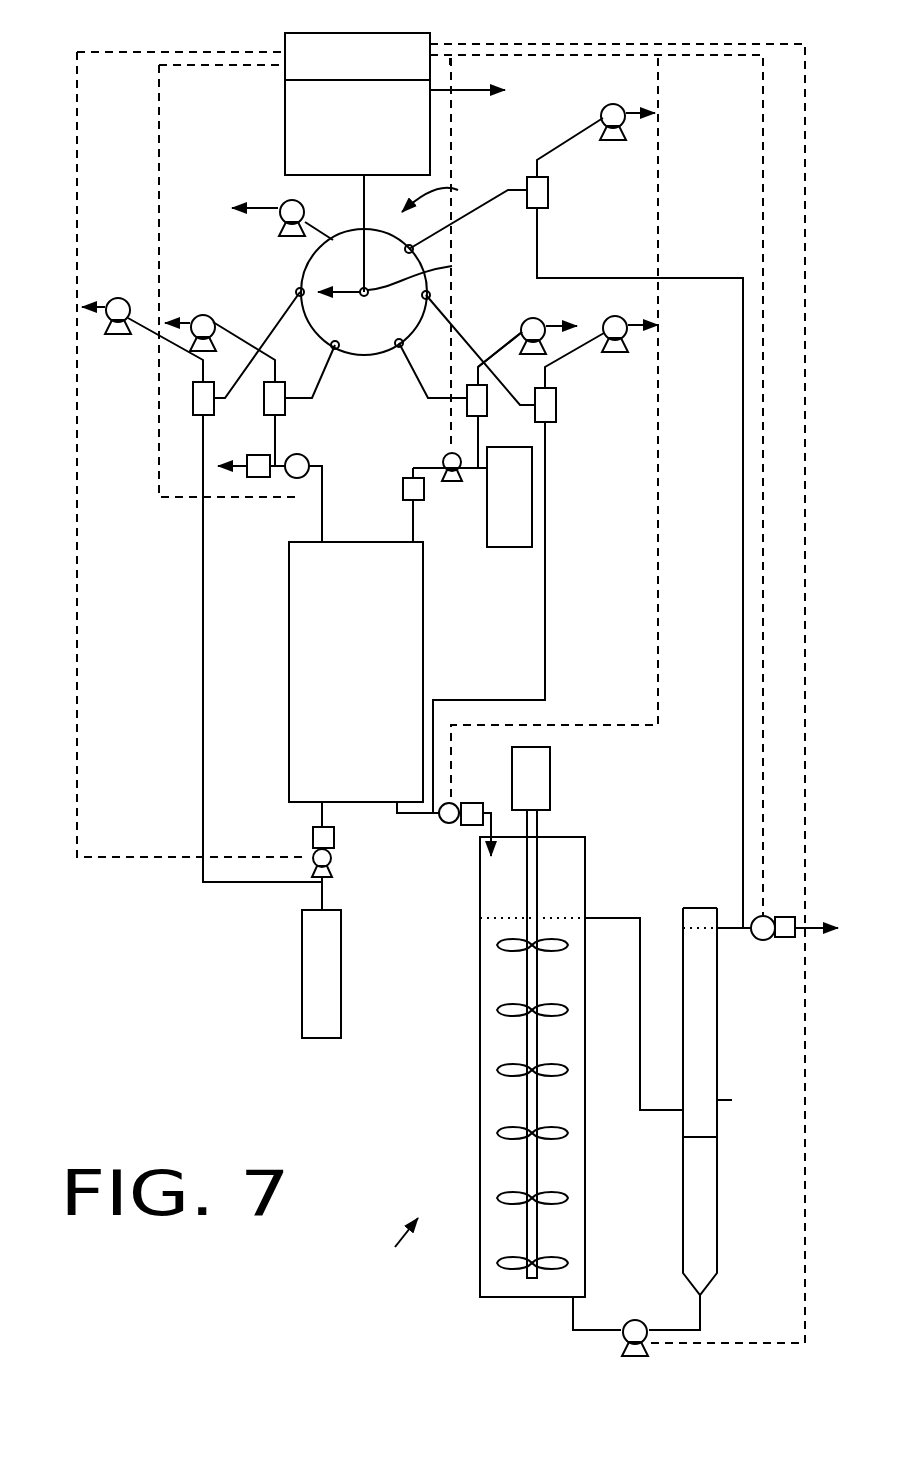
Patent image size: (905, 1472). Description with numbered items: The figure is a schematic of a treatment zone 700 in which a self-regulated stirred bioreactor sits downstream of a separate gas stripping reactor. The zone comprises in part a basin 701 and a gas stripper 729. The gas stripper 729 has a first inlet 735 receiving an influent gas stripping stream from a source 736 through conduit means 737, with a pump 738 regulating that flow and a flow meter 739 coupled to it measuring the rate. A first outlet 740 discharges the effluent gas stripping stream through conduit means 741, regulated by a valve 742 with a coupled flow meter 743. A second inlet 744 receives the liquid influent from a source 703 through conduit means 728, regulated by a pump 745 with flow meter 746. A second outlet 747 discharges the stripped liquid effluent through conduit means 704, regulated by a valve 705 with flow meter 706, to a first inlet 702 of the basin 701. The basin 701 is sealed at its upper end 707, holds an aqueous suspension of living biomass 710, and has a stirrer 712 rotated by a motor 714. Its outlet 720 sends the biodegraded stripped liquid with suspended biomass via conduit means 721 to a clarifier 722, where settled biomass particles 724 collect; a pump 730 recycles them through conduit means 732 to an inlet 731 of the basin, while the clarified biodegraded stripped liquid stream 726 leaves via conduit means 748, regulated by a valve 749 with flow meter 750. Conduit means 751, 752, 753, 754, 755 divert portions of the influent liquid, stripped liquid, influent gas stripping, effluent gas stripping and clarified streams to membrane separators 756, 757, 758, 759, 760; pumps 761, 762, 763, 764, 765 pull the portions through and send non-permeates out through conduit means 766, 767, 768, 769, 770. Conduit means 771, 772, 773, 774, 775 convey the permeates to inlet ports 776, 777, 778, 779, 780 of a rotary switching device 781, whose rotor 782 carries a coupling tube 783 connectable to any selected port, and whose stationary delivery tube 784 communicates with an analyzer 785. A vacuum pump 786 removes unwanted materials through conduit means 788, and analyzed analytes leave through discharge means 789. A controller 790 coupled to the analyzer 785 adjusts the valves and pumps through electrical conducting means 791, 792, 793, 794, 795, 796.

The treatment zone 700 is at (389, 1243).
The basin 701 is at (480, 1105).
The first inlet 702 is at (495, 835).
The source 703 is at (512, 547).
The conduit means 704 is at (418, 825).
The valve 705 is at (444, 825).
The flow meter 706 is at (472, 825).
The upper end 707 is at (558, 837).
The living biomass 710 is at (570, 1118).
The stirrer 712 is at (540, 880).
The motor 714 is at (540, 778).
The outlet 720 is at (588, 918).
The conduit means 721 is at (642, 930).
The clarifier 722 is at (717, 1042).
The settled biomass particles 724 is at (708, 1168).
The clarified biodegraded stripped liquid stream 726 is at (717, 1100).
The conduit means 728 is at (478, 485).
The gas stripper 729 is at (289, 716).
The pump 730 is at (636, 1328).
The inlet 731 is at (573, 1300).
The conduit means 732 is at (700, 1325).
The first inlet 735 is at (322, 812).
The source 736 is at (302, 962).
The conduit means 737 is at (322, 902).
The pump 738 is at (330, 864).
The flow meter 739 is at (313, 838).
The first outlet 740 is at (318, 542).
The conduit means 741 is at (322, 508).
The valve 742 is at (308, 460).
The flow meter 743 is at (258, 477).
The second inlet 744 is at (413, 542).
The pump 745 is at (452, 481).
The flow meter 746 is at (410, 478).
The second outlet 747 is at (400, 812).
The conduit means 748 is at (733, 927).
The valve 749 is at (760, 940).
The flow meter 750 is at (785, 937).
The conduit means 751 is at (468, 430).
The conduit means 752 is at (545, 632).
The conduit means 753 is at (203, 588).
The conduit means 754 is at (275, 435).
The conduit means 755 is at (743, 410).
The membrane separator 756 is at (467, 405).
The membrane separator 757 is at (556, 405).
The membrane separator 758 is at (193, 398).
The membrane separator 759 is at (285, 412).
The membrane separator 760 is at (548, 190).
The pump 761 is at (533, 319).
The pump 762 is at (617, 318).
The pump 763 is at (116, 306).
The pump 764 is at (202, 318).
The pump 765 is at (612, 112).
The conduit means 766 is at (492, 358).
The conduit means 767 is at (578, 342).
The conduit means 768 is at (170, 328).
The conduit means 769 is at (248, 335).
The conduit means 770 is at (550, 150).
The conduit means 771 is at (412, 370).
The conduit means 772 is at (487, 405).
The conduit means 773 is at (270, 318).
The conduit means 774 is at (312, 396).
The conduit means 775 is at (512, 192).
The inlet port 776 is at (403, 343).
The inlet port 777 is at (432, 292).
The inlet port 778 is at (302, 296).
The inlet port 779 is at (337, 348).
The inlet port 780 is at (409, 245).
The rotary switching device 781 is at (449, 192).
The rotor 782 is at (434, 271).
The coupling tube 783 is at (338, 292).
The stationary delivery tube 784 is at (366, 247).
The analyzer 785 is at (285, 125).
The vacuum pump 786 is at (290, 202).
The conduit means 788 is at (328, 232).
The discharge means 789 is at (475, 97).
The controller 790 is at (340, 33).
The electrical conducting means 791 is at (658, 212).
The electrical conducting means 792 is at (159, 218).
The electrical conducting means 793 is at (763, 212).
The electrical conducting means 794 is at (77, 215).
The electrical conducting means 795 is at (451, 122).
The electrical conducting means 796 is at (805, 212).